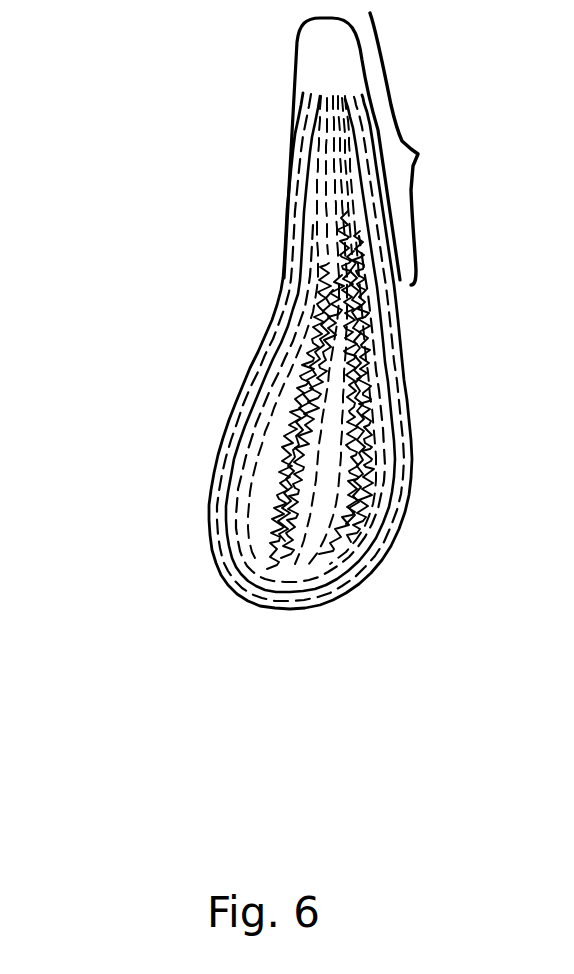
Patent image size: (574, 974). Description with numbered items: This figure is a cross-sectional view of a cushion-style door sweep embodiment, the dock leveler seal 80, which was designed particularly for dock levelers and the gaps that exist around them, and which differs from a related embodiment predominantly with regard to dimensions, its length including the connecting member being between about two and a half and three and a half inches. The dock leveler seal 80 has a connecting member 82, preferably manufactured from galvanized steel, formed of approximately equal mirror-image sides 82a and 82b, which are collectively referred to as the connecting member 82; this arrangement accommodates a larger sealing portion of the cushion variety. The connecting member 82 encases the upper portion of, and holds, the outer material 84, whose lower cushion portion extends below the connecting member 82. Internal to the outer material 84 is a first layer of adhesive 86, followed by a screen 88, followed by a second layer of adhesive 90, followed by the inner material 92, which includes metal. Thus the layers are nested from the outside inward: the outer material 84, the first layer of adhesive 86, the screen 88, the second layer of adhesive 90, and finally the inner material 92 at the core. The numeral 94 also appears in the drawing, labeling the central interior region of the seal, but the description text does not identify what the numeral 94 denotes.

The dock leveler seal 80 is at (165, 220).
The connecting member 82 is at (317, 149).
The mirror-image side of connecting member 82a is at (292, 133).
The mirror-image side of connecting member 82b is at (399, 130).
The outer material 84 is at (237, 402).
The first layer of adhesive 86 is at (218, 503).
The screen 88 is at (232, 571).
The second layer of adhesive 90 is at (293, 570).
The inner material 92 is at (350, 513).
The central region 94 is at (320, 467).